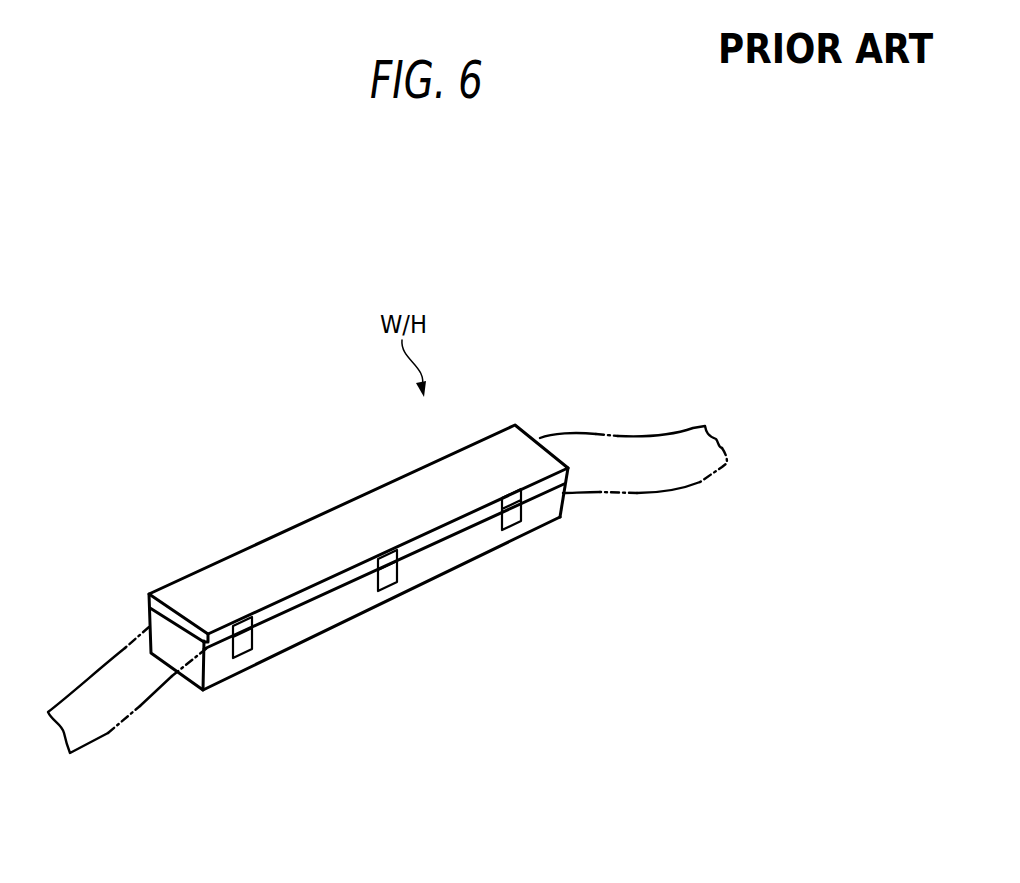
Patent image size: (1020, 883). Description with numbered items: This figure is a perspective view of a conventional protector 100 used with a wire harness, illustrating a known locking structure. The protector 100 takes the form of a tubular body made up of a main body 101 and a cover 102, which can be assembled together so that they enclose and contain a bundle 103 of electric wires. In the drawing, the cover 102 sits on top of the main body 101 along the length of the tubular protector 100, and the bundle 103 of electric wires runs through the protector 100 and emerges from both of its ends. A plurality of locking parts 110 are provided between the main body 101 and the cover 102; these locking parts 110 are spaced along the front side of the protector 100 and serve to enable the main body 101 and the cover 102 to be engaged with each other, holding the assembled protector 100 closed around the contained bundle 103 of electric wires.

The protector 100 is at (358, 579).
The main body 101 is at (447, 563).
The cover 102 is at (378, 503).
The bundle of electric wires 103 is at (657, 438).
The locking parts 110 is at (247, 667).